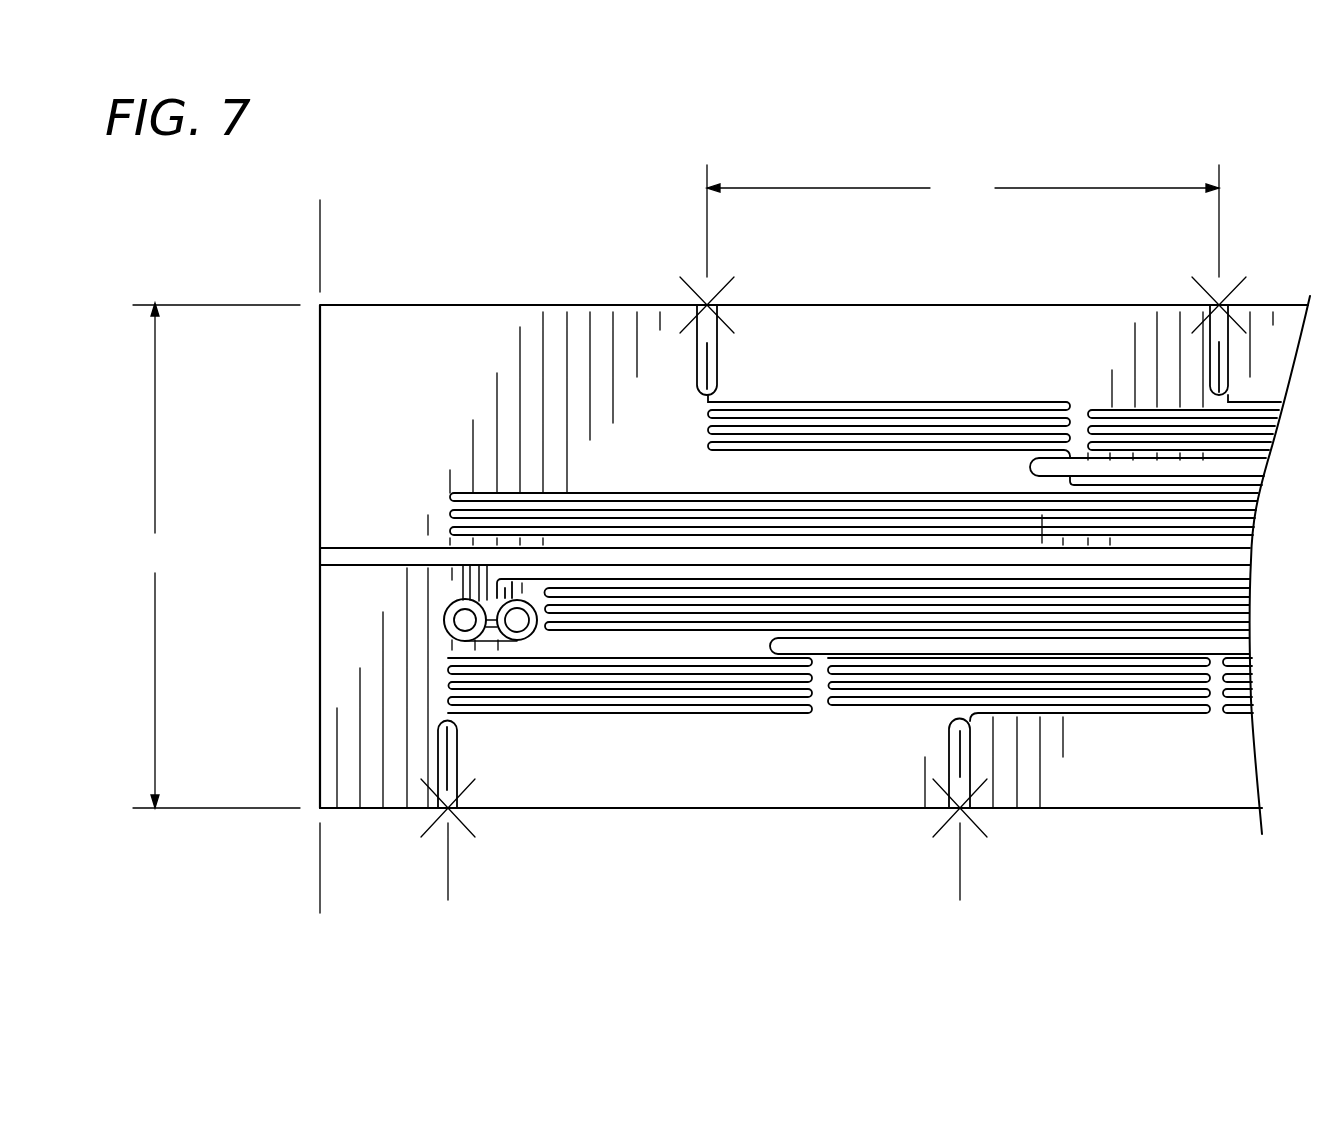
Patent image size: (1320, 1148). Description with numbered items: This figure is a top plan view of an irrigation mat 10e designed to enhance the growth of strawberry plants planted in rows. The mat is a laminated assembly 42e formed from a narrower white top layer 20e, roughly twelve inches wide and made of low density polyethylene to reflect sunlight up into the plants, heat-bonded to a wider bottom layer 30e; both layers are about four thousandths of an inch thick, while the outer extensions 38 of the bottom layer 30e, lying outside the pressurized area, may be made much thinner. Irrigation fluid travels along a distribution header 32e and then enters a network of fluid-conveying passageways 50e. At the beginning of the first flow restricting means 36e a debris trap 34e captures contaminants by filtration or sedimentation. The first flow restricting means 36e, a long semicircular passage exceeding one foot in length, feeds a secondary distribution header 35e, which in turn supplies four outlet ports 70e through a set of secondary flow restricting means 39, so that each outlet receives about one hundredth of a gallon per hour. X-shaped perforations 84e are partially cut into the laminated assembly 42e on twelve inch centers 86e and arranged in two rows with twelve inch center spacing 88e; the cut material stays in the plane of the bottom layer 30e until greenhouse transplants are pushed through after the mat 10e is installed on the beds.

The mat 10e is at (930, 300).
The top layer 20e is at (679, 800).
The bottom layer 30e is at (1057, 832).
The distribution header 32e is at (342, 548).
The debris trap 34e is at (497, 633).
The secondary distribution header 35e is at (1010, 652).
The first flow restricting means 36e is at (690, 490).
The outer extensions 38 is at (318, 262).
The secondary flow restricting means 39 is at (887, 395).
The laminated assembly 42e is at (512, 310).
The fluid-conveying passageways 50e is at (957, 418).
The outlet ports 70e is at (1212, 368).
The X-shaped perforations 84e is at (453, 828).
The perforation center spacing 86e is at (963, 221).
The row center spacing 88e is at (216, 555).